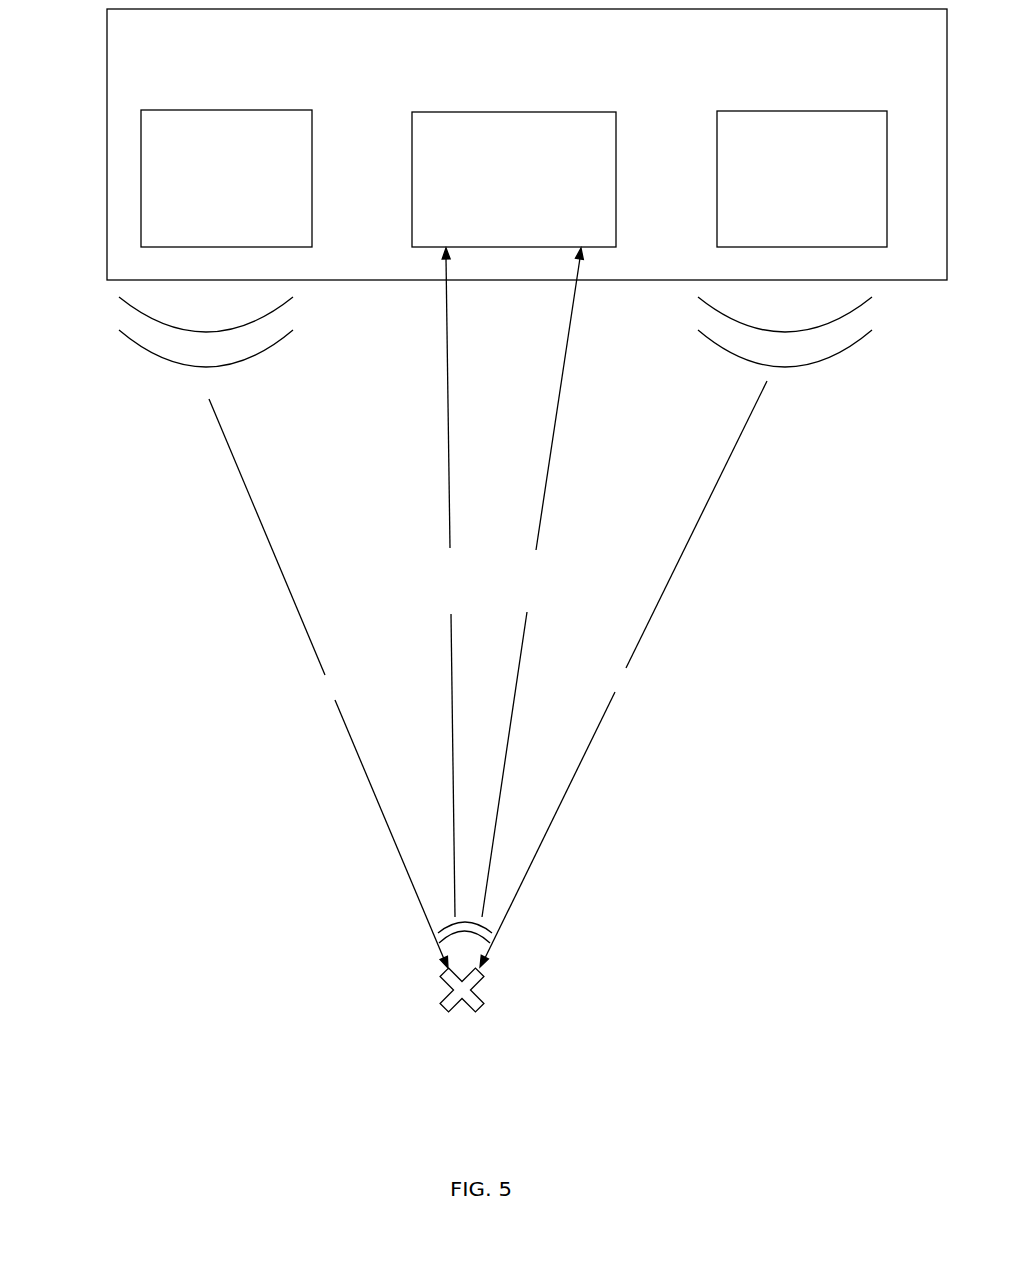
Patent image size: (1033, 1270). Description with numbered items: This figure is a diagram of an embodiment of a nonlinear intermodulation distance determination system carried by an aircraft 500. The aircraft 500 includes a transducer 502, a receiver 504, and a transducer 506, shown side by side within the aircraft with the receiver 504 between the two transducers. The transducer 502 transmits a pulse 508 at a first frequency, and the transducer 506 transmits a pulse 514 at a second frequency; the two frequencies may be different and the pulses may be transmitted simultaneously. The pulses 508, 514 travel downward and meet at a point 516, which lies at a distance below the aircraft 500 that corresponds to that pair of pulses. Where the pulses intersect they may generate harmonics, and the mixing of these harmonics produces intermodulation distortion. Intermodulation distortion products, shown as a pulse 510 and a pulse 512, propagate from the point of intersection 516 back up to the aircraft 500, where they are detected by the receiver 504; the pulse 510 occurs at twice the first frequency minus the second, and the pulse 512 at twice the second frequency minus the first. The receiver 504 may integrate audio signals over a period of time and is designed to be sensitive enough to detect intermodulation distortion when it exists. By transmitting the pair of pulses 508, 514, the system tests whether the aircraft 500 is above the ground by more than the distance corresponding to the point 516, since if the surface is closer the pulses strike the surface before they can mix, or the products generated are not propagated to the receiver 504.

The aircraft 500 is at (107, 47).
The transducer 502 is at (141, 138).
The receiver 504 is at (412, 138).
The transducer 506 is at (717, 138).
The pulse 508 is at (241, 480).
The intermodulation distortion products pulse 510 is at (447, 423).
The intermodulation distortion products pulse 512 is at (557, 425).
The pulse 514 is at (738, 438).
The point of intersection 516 is at (470, 1010).